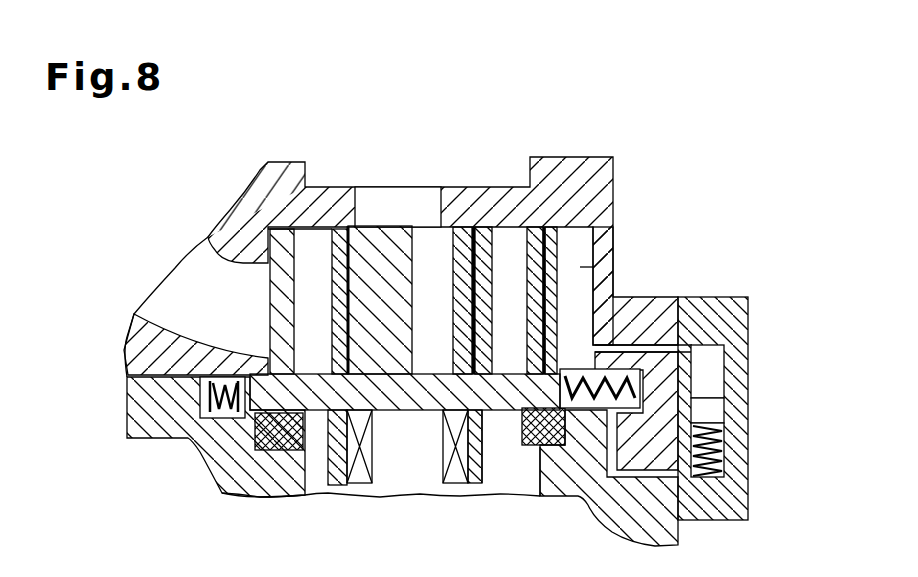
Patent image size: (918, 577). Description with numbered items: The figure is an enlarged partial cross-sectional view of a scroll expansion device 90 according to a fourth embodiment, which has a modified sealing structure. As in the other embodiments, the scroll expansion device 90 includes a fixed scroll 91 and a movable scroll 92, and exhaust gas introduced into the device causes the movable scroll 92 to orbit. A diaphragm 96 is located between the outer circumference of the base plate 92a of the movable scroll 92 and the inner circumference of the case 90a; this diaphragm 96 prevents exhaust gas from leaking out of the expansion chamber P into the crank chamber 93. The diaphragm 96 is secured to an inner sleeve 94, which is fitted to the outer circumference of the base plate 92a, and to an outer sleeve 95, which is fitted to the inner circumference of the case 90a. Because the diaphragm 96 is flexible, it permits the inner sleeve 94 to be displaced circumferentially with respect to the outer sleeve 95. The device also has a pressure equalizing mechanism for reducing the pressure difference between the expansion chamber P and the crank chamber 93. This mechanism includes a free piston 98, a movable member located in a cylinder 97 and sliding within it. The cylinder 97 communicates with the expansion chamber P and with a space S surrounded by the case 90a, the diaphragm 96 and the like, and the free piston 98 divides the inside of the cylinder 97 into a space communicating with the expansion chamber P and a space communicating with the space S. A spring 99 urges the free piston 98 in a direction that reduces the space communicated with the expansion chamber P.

The scroll expansion device 90 is at (668, 192).
The case 90a is at (655, 297).
The fixed scroll 91 is at (450, 247).
The movable scroll 92 is at (297, 248).
The base plate 92a is at (258, 380).
The crank chamber 93 is at (494, 466).
The inner sleeve 94 is at (221, 417).
The outer sleeve 95 is at (178, 445).
The diaphragm 96 is at (213, 412).
The cylinder 97 is at (722, 381).
The free piston 98 is at (715, 412).
The spring 99 is at (743, 463).
The expansion chamber P is at (614, 246).
The space S is at (606, 397).